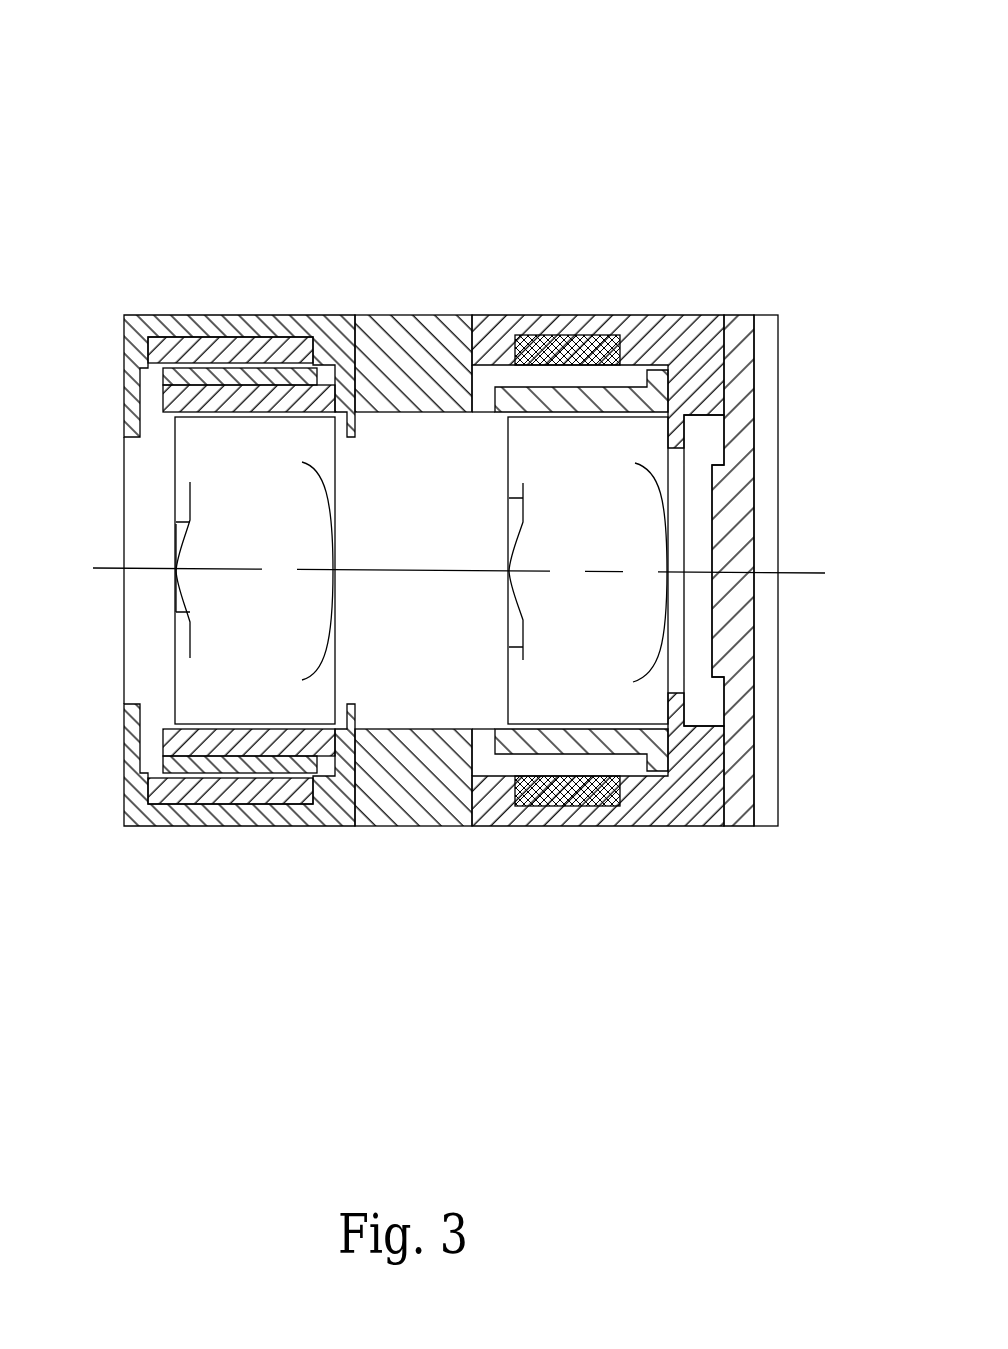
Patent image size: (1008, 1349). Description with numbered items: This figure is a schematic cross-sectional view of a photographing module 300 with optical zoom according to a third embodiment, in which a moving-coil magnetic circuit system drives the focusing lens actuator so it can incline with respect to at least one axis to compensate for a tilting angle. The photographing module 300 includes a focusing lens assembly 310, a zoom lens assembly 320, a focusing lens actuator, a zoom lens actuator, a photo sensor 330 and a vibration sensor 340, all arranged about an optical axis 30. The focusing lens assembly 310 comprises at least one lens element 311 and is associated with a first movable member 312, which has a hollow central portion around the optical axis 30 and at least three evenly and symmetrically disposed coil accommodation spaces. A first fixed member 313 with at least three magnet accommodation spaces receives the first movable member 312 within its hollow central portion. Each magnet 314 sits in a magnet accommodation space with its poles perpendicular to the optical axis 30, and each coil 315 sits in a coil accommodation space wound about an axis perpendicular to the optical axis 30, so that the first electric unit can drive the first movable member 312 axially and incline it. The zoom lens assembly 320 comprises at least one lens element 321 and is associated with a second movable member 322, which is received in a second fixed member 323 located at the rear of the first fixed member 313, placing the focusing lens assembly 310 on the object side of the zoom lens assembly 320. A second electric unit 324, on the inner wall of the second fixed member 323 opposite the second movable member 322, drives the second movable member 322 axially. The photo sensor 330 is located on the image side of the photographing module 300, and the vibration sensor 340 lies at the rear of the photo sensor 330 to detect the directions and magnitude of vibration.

The photographing module 300 is at (858, 41).
The focusing lens assembly 310 is at (210, 468).
The lens element 311 is at (174, 556).
The first movable member 312 is at (225, 400).
The first fixed member 313 is at (148, 336).
The magnet 314 is at (200, 790).
The coil 315 is at (265, 763).
The zoom lens assembly 320 is at (543, 468).
The lens element 321 is at (508, 557).
The second movable member 322 is at (560, 385).
The second fixed member 323 is at (483, 330).
The second electric unit 324 is at (540, 333).
The photo sensor 330 is at (757, 507).
The vibration sensor 340 is at (767, 365).
The optical axis 30 is at (477, 576).